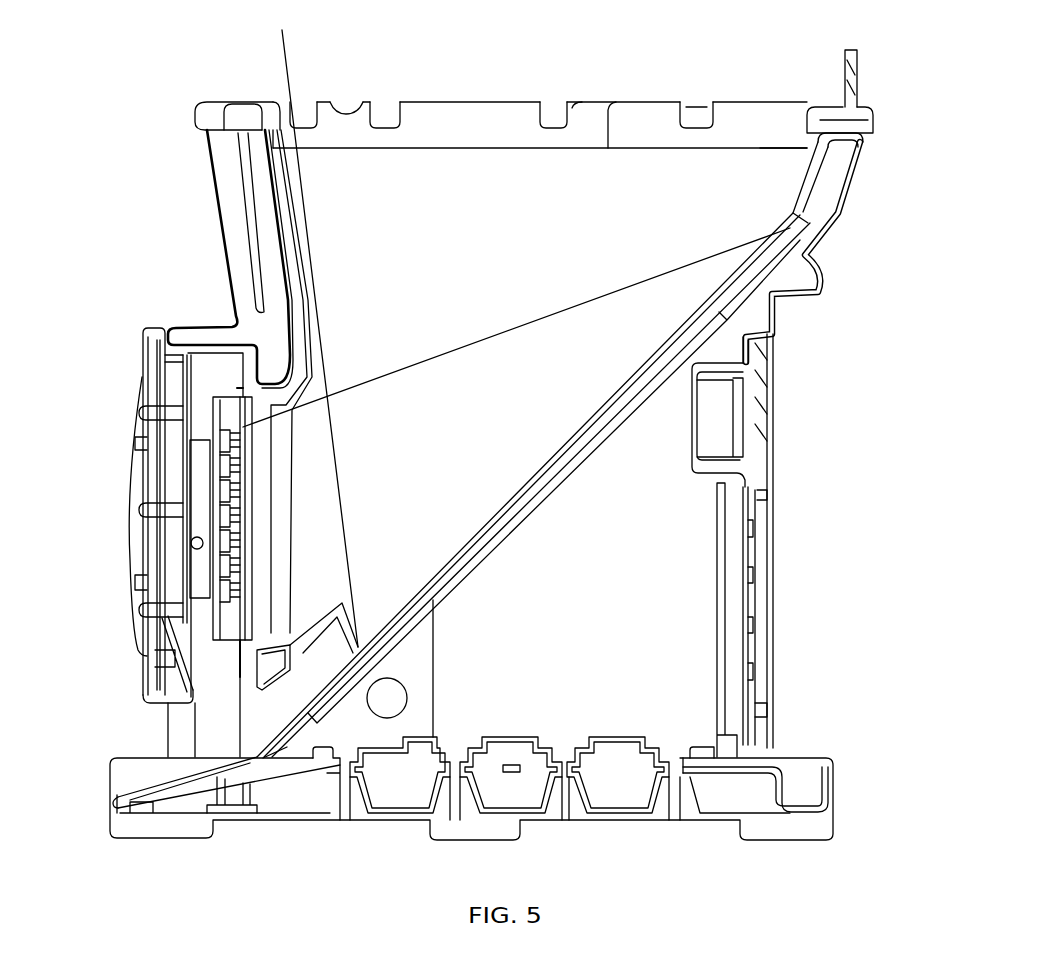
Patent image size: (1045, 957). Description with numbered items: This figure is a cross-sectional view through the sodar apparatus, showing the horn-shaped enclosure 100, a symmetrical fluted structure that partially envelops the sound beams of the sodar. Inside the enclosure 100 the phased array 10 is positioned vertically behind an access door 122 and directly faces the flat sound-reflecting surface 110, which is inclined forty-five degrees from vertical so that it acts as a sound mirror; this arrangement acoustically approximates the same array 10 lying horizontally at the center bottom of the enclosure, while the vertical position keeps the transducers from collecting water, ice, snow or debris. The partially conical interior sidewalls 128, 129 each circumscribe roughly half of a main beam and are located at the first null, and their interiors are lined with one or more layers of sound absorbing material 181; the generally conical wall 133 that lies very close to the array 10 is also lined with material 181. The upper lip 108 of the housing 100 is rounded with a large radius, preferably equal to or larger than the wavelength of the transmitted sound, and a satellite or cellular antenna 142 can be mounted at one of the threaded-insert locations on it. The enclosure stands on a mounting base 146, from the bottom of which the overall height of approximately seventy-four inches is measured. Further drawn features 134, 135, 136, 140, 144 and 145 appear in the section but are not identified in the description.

The array 10 is at (243, 427).
The horn-shaped enclosure 100 is at (768, 622).
The upper lip 108 is at (520, 108).
The flat sound-reflecting surface 110 is at (493, 530).
The access door 122 is at (127, 482).
The interior sidewall 128 is at (345, 160).
The interior sidewall 129 is at (780, 163).
The generally conical wall 133 is at (250, 320).
The bottom plate 134 is at (283, 720).
The guide line 135 is at (560, 312).
The wall edge 136 is at (280, 50).
The latch bracket 140 is at (743, 407).
The satellite or cellular antenna 142 is at (857, 87).
The right side wall 144 is at (772, 522).
The inner wall 145 is at (688, 693).
The mounting base 146 is at (740, 800).
The sound absorbing material 181 is at (810, 173).